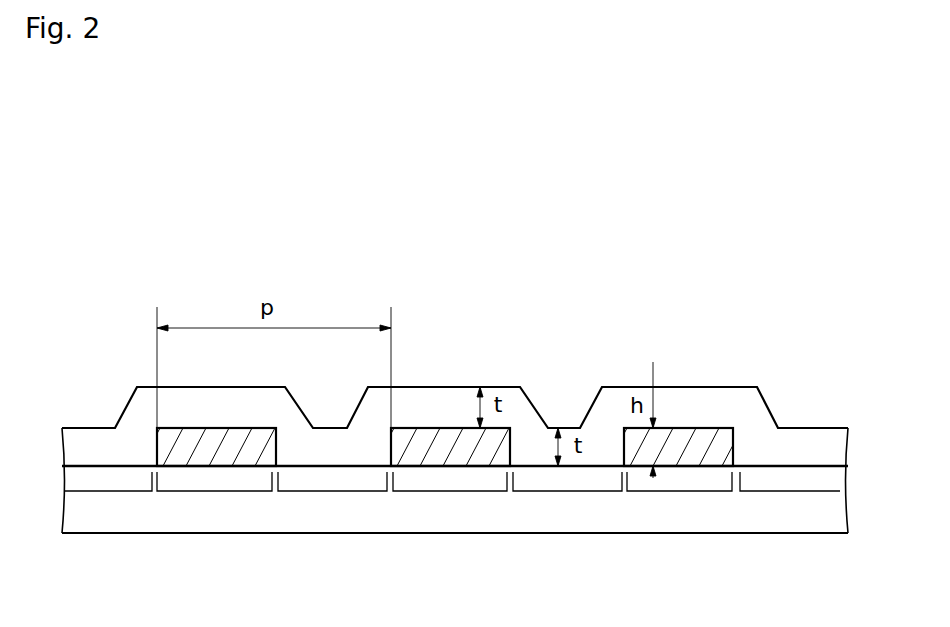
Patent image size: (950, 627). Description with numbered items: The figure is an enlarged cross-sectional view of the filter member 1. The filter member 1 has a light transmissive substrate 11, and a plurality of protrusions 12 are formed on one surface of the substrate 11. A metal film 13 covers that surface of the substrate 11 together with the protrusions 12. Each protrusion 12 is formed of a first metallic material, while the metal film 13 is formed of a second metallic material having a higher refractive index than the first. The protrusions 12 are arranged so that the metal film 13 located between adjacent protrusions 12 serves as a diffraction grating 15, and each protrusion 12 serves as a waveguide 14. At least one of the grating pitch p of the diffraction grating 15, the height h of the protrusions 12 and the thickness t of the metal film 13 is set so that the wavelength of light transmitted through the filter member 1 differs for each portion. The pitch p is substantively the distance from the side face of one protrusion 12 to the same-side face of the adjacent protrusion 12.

The filter member 1 is at (195, 263).
The light transmissive substrate 11 is at (635, 527).
The protrusion 12 is at (685, 433).
The metal film 13 is at (793, 437).
The waveguide 14 is at (678, 497).
The diffraction grating 15 is at (795, 497).